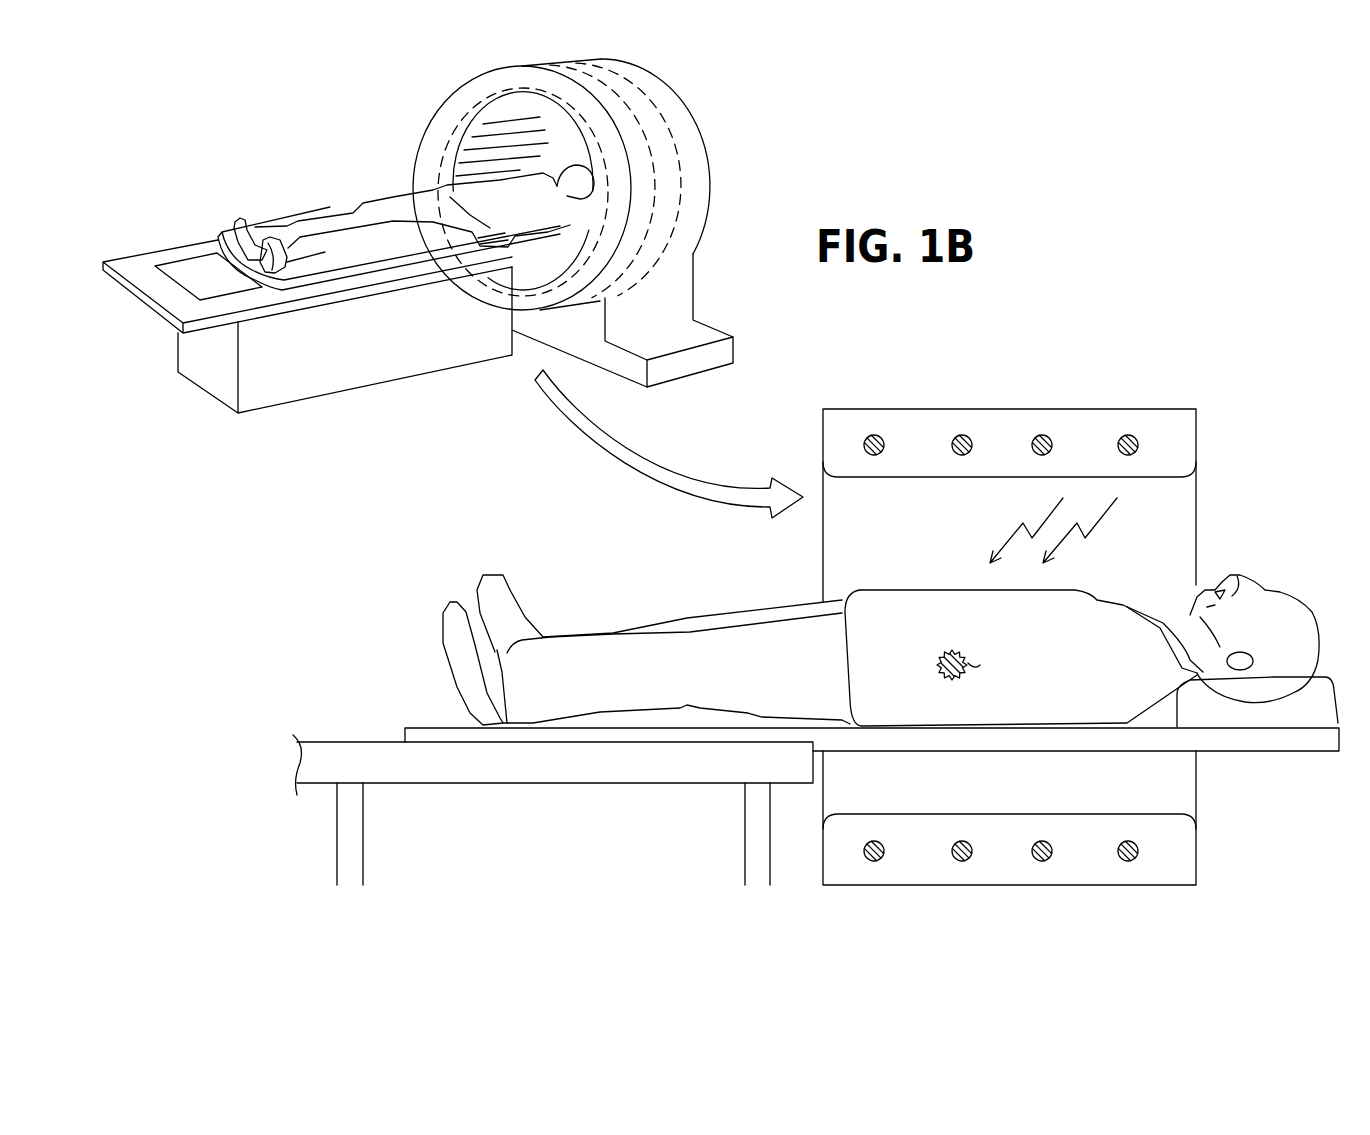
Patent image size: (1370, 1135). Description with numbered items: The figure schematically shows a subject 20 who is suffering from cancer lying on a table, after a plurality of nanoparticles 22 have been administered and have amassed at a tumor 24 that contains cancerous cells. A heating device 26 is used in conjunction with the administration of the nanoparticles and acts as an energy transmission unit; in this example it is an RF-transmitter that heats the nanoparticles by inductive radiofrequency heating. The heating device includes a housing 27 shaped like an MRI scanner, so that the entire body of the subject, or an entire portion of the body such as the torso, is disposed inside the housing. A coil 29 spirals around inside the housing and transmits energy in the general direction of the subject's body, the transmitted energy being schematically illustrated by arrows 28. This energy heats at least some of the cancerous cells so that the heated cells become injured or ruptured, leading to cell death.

The subject 20 is at (402, 200).
The nanoparticles 22 is at (968, 663).
The tumor 24 is at (937, 660).
The heating device 26 is at (1165, 409).
The housing 27 is at (1197, 443).
The arrows 28 is at (1045, 518).
The coil 29 is at (650, 120).